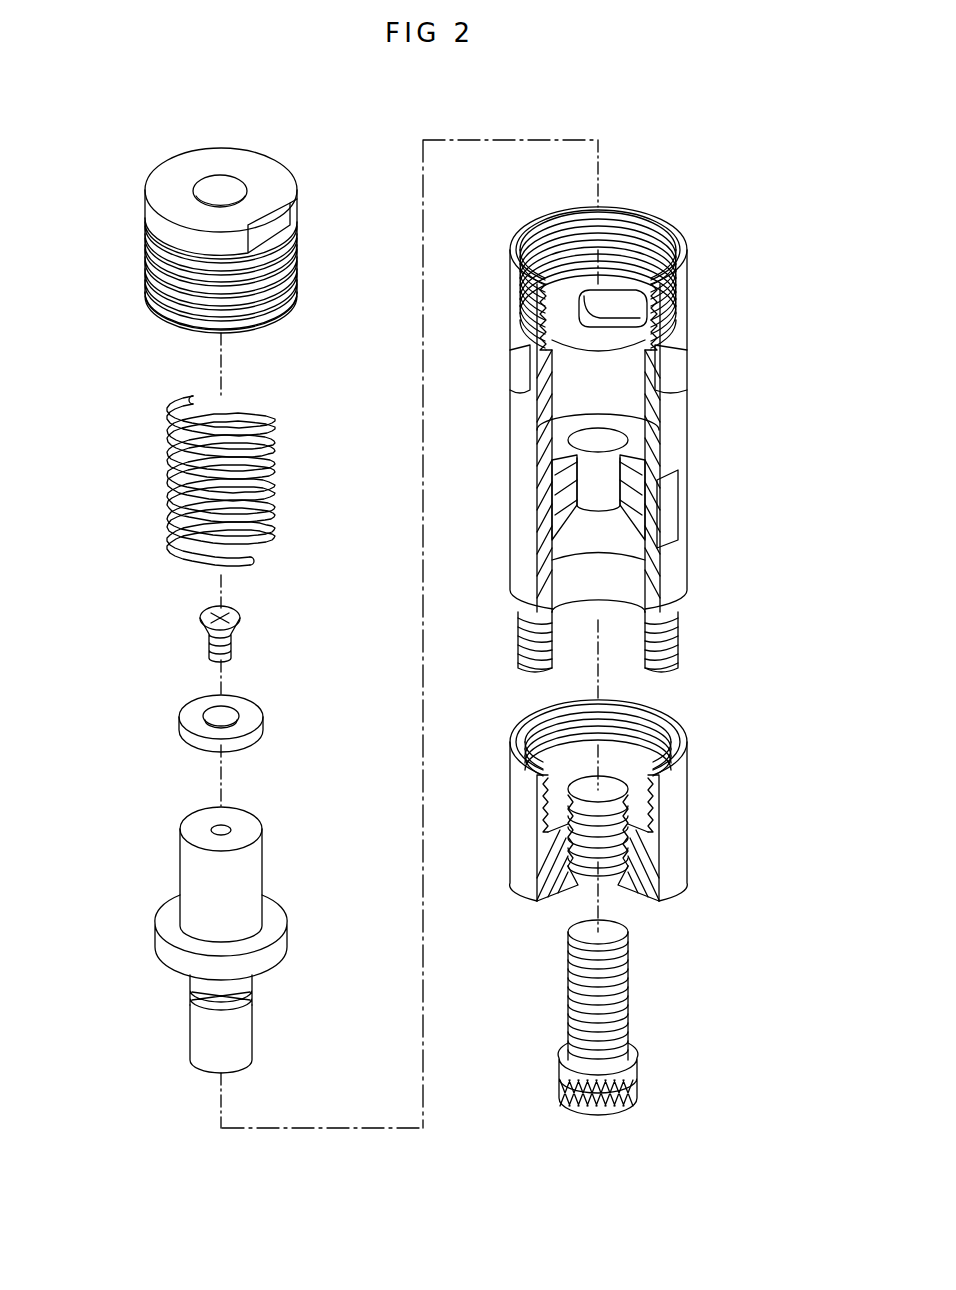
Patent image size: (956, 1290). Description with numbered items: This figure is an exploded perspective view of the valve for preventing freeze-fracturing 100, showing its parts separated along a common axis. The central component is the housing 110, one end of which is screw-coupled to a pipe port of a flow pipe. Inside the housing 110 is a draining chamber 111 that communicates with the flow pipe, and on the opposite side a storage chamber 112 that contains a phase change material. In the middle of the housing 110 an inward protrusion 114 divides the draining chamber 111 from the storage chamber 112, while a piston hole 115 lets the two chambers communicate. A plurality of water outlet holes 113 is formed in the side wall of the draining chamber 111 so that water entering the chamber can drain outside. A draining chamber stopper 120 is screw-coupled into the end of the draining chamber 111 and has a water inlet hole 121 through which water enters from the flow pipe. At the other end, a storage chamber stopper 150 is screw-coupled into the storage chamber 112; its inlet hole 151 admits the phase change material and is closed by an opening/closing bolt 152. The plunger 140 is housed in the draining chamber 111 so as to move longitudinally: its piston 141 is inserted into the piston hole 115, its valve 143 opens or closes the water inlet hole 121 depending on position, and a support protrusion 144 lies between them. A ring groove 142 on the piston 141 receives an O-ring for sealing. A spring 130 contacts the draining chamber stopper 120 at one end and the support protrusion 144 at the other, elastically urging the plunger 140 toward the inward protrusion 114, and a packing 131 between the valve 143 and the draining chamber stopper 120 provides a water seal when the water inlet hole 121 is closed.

The valve for preventing freeze-fracturing 100 is at (712, 170).
The housing 110 is at (686, 494).
The draining chamber 111 is at (578, 386).
The storage chamber 112 is at (617, 570).
The water outlet holes 113 is at (697, 368).
The inward protrusion 114 is at (627, 422).
The piston hole 115 is at (612, 451).
The draining chamber stopper 120 is at (277, 165).
The water inlet hole 121 is at (216, 186).
The spring 130 is at (263, 412).
The packing 131 is at (196, 713).
The plunger 140 is at (146, 918).
The piston 141 is at (205, 1050).
The ring groove 142 is at (195, 1006).
The valve 143 is at (185, 866).
The support protrusion 144 is at (273, 907).
The storage chamber stopper 150 is at (680, 823).
The inlet hole 151 is at (548, 745).
The opening/closing bolt 152 is at (630, 990).